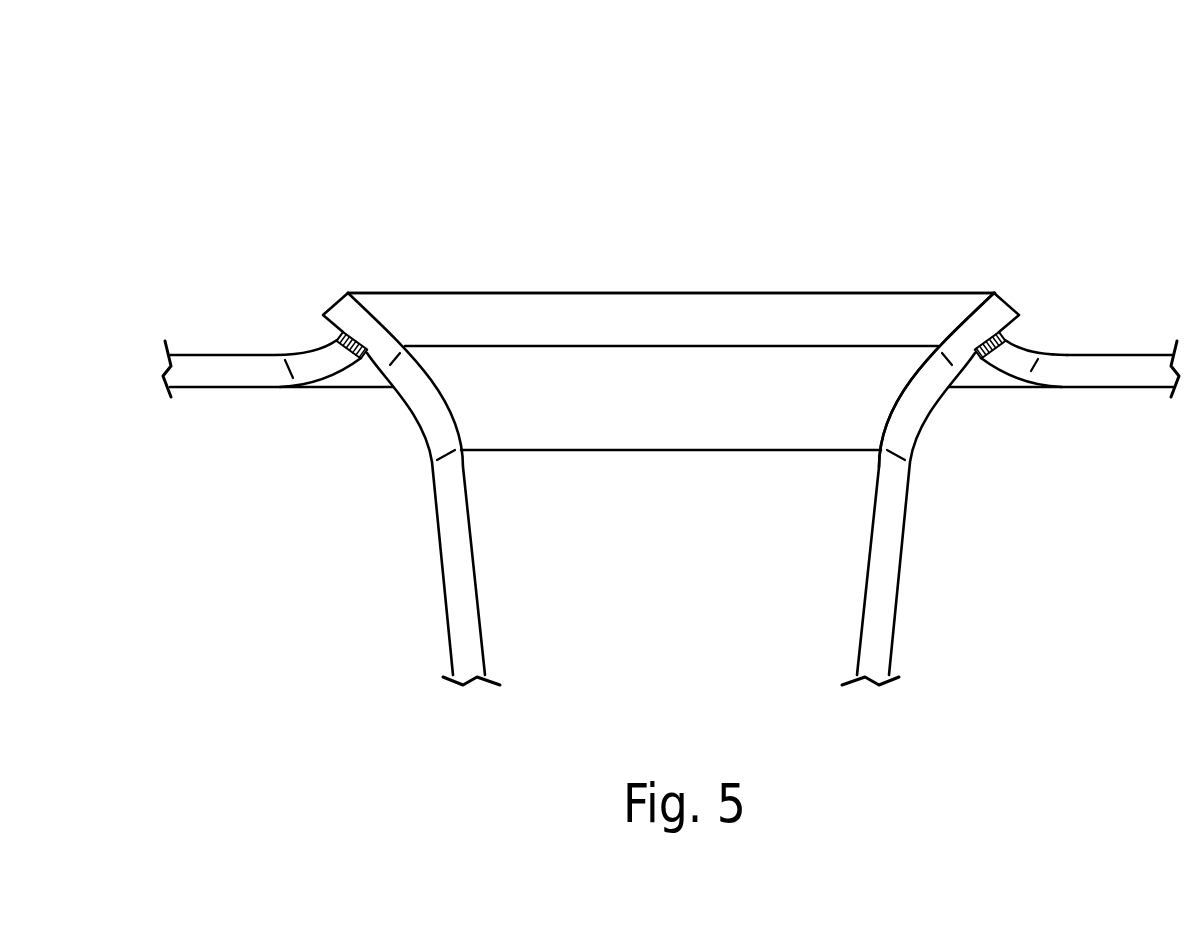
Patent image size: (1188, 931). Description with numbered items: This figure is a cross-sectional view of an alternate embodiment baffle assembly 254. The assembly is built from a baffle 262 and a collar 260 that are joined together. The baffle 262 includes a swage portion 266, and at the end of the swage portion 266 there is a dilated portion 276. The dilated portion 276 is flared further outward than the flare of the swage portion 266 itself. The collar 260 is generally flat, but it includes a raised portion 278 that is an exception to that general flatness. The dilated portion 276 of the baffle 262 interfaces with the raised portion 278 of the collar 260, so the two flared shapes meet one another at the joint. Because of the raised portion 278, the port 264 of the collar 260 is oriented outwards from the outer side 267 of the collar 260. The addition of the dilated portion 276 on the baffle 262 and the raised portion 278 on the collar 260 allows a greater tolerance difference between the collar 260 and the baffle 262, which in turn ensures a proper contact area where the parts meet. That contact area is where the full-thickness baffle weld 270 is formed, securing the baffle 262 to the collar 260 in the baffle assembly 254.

The baffle assembly 254 is at (405, 118).
The collar 260 is at (1099, 393).
The baffle 262 is at (616, 278).
The port 264 is at (1011, 305).
The swage portion 266 is at (778, 290).
The outer side 267 is at (1115, 355).
The baffle weld 270 is at (977, 350).
The dilated portion 276 is at (970, 343).
The raised portion 278 is at (1023, 342).